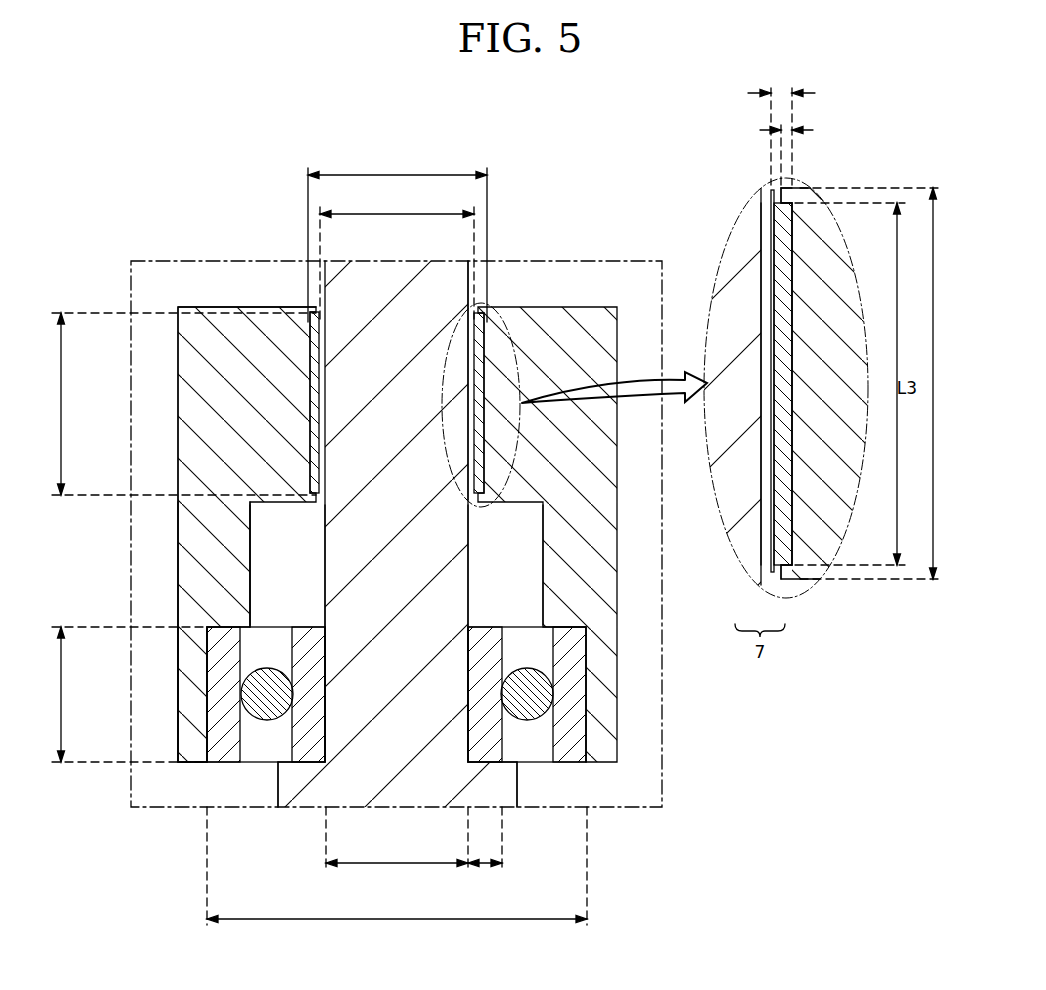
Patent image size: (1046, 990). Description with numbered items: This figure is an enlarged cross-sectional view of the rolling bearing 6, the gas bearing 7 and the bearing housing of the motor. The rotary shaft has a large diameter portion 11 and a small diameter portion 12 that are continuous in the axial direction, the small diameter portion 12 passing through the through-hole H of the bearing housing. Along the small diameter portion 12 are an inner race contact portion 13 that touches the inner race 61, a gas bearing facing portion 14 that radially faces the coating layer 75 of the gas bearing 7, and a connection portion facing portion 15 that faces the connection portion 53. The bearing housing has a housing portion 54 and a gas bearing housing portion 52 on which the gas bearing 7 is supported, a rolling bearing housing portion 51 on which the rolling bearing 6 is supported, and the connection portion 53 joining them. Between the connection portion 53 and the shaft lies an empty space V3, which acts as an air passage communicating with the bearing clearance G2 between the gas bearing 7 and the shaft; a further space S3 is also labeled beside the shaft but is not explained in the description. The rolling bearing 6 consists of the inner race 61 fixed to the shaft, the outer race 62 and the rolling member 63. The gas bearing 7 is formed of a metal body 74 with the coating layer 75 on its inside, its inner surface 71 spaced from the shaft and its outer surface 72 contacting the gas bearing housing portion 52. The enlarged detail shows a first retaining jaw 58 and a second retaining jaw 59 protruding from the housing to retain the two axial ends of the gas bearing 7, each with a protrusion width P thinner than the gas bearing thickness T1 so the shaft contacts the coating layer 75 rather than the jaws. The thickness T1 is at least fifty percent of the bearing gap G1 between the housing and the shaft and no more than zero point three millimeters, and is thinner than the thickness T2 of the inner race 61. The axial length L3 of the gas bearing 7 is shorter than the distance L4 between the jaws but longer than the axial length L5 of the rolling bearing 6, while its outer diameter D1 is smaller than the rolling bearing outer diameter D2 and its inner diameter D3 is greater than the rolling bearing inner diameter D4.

The rolling bearing 6 is at (474, 694).
The gas bearing 7 is at (310, 337).
The large diameter portion 11 is at (517, 783).
The small diameter portion 12 is at (468, 306).
The inner race contact portion 13 is at (340, 704).
The gas bearing facing portion 14 is at (345, 367).
The connection portion facing portion 15 is at (350, 548).
The rolling bearing housing portion 51 is at (193, 680).
The gas bearing housing portion 52 is at (193, 402).
The connection portion 53 is at (193, 527).
The housing portion 54 is at (178, 306).
The first retaining jaw 58 is at (771, 190).
The second retaining jaw 59 is at (787, 575).
The inner race 61 is at (482, 740).
The outer race 62 is at (577, 647).
The rolling member 63 is at (543, 693).
The inner surface 71 is at (765, 452).
The outer surface 72 is at (793, 318).
The metal body 74 is at (783, 560).
The coating layer 75 is at (771, 558).
The through-hole H is at (323, 304).
The bearing gap G1 is at (800, 200).
The bearing clearance G2 is at (488, 313).
The space S3 is at (519, 573).
The empty space V3 is at (271, 604).
The outer diameter of the gas bearing D1 is at (397, 239).
The outer diameter of the rolling bearing D2 is at (397, 931).
The inner diameter of the gas bearing D3 is at (397, 258).
The inner diameter of the rolling bearing D4 is at (397, 866).
The thickness of the gas bearing T1 is at (781, 126).
The thickness of the inner race T2 is at (485, 875).
The protrusion width P is at (786, 121).
The axial length of the gas bearing L3 is at (178, 537).
The distance between the retaining jaws L4 is at (875, 383).
The axial length of the rolling bearing L5 is at (52, 694).